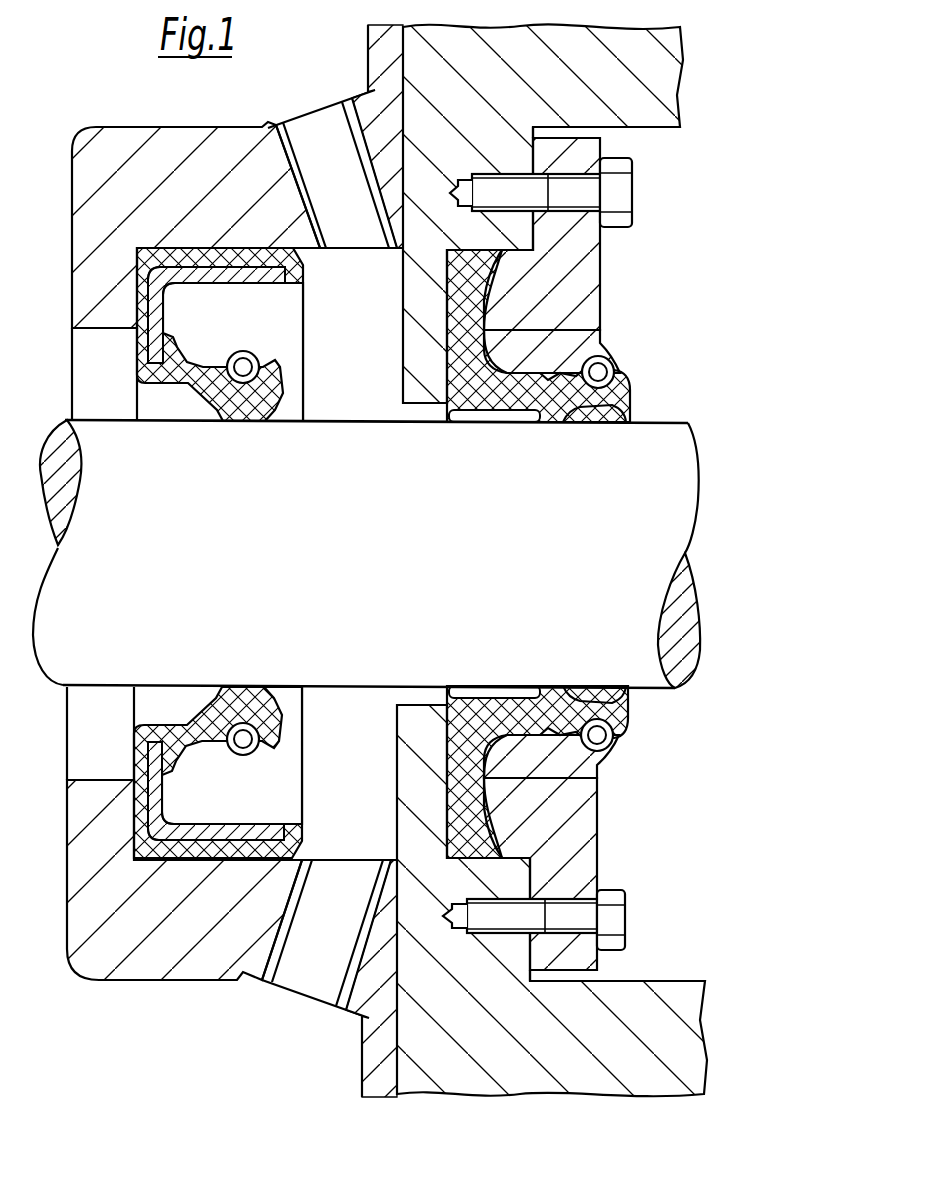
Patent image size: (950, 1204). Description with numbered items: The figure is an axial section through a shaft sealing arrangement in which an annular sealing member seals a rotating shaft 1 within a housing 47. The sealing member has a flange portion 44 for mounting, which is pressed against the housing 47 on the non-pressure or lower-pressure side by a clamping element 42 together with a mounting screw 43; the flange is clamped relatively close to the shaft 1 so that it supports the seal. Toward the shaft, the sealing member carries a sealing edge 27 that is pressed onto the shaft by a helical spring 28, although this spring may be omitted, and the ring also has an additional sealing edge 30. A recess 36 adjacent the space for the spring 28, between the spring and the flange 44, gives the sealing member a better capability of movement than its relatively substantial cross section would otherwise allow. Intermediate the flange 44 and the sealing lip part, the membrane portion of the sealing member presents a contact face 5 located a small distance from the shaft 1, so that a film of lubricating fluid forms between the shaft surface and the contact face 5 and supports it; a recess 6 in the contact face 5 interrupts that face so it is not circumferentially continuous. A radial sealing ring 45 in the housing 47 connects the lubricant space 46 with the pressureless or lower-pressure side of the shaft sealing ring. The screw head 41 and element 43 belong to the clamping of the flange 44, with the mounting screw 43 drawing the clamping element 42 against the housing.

The shaft 1 is at (645, 485).
The contact face 5 is at (593, 345).
The recess 6 is at (615, 250).
The sealing edge 27 is at (605, 336).
The helical spring 28 is at (580, 758).
The additional sealing edge 30 is at (612, 368).
The recess 36 is at (560, 820).
The bolt 41 is at (592, 936).
The clamping element 42 is at (508, 873).
The mounting screw 43 is at (627, 925).
The flange portion 44 is at (634, 195).
The radial sealing ring 45 is at (223, 845).
The lubricant space 46 is at (340, 778).
The housing 47 is at (128, 923).